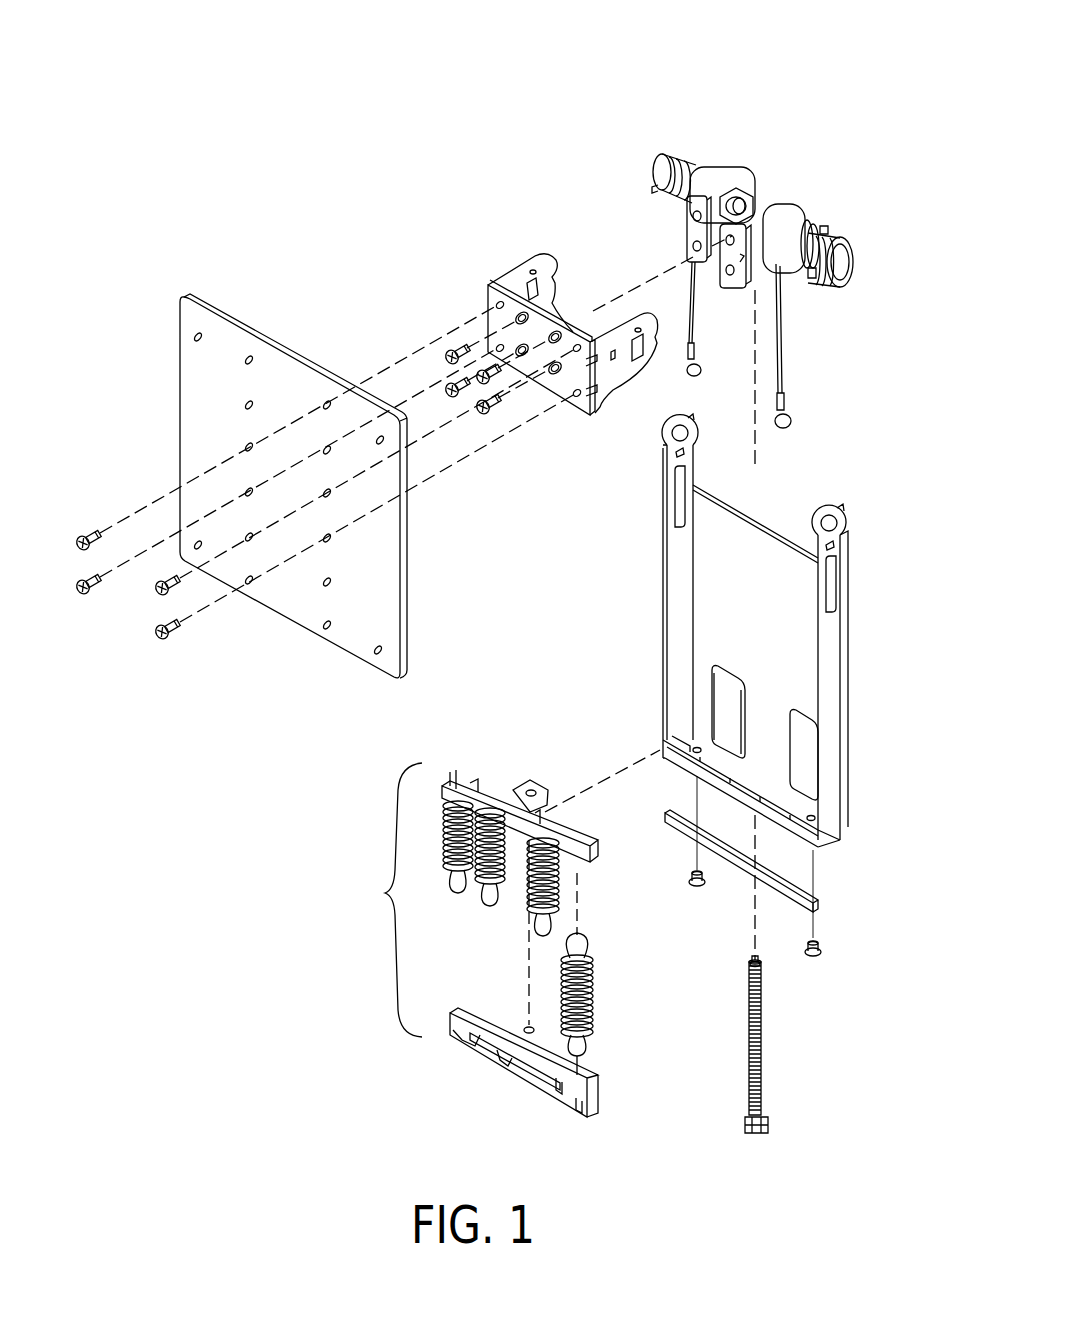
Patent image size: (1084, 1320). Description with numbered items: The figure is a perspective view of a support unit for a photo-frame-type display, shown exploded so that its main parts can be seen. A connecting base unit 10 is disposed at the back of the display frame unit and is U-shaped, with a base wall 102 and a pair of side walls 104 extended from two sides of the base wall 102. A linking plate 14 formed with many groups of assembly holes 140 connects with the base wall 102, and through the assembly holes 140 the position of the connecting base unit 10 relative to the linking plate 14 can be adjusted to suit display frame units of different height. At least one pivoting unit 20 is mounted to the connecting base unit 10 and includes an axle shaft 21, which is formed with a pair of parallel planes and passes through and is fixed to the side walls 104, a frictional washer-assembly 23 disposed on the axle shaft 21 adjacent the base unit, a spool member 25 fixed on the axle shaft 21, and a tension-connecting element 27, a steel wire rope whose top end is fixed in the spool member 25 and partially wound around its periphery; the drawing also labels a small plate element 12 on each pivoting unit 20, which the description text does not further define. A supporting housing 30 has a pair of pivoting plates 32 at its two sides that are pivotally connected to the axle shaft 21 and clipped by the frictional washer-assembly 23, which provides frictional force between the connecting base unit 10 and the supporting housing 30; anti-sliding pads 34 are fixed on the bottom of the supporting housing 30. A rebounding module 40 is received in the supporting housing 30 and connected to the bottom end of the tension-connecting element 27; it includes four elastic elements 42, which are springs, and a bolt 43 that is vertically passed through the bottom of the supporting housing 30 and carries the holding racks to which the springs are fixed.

The connecting base unit 10 is at (564, 297).
The base wall 102 is at (562, 390).
The side walls 104 is at (517, 280).
The hook mounting plate 12 is at (684, 219).
The linking plate 14 is at (223, 318).
The assembly holes 140 is at (326, 403).
The pivoting unit 20 is at (734, 231).
The axle shaft 21 is at (845, 290).
The frictional washer-assembly 23 is at (830, 232).
The spool member 25 is at (779, 225).
The tension-connecting element 27 is at (693, 305).
The supporting housing 30 is at (709, 652).
The pivoting plates 32 is at (664, 578).
The anti-sliding pads 34 is at (738, 878).
The rebounding module 40 is at (507, 940).
The elastic element 42 is at (598, 993).
The bolt 43 is at (763, 1040).